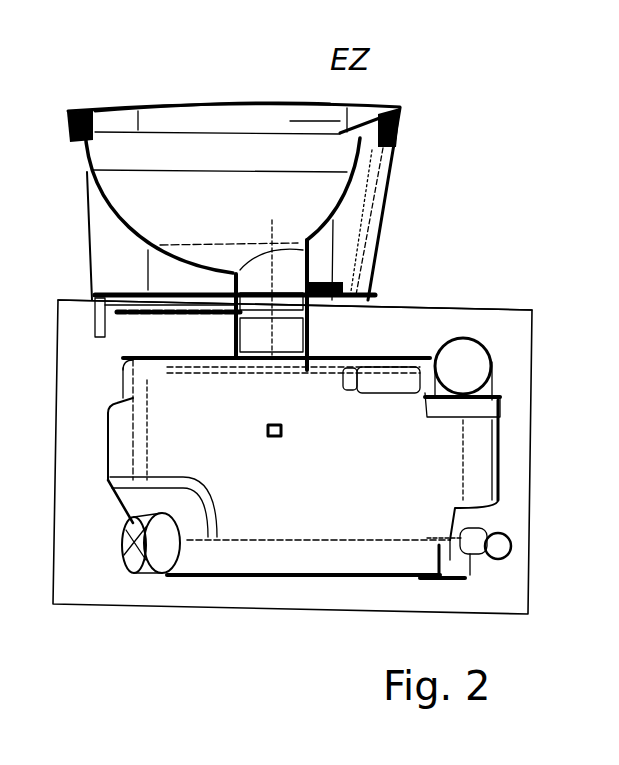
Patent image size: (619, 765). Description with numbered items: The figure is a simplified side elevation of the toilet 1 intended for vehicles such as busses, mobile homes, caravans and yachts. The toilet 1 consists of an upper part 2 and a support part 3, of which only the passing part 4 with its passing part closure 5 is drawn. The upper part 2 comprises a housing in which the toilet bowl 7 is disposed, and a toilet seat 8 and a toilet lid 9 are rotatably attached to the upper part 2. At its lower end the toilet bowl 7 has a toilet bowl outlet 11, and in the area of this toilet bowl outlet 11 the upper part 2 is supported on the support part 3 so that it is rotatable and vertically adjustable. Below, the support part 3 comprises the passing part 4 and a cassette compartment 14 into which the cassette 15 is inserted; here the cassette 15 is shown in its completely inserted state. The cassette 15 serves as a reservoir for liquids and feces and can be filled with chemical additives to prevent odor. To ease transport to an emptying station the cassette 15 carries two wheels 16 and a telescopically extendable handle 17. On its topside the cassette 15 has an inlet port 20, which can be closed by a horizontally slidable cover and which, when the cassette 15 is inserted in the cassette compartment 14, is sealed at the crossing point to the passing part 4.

The toilet 1 is at (531, 90).
The upper part 2 is at (236, 200).
The support part 3 is at (482, 308).
The passing part 4 is at (318, 318).
The passing part closure 5 is at (130, 327).
The toilet bowl 7 is at (100, 203).
The toilet seat 8 is at (90, 110).
The toilet lid 9 is at (127, 110).
The toilet bowl outlet 11 is at (178, 334).
The cassette compartment 14 is at (513, 340).
The cassette 15 is at (503, 458).
The wheels 16 is at (133, 540).
The telescopically extendable handle 17 is at (511, 542).
The inlet port 20 is at (264, 372).